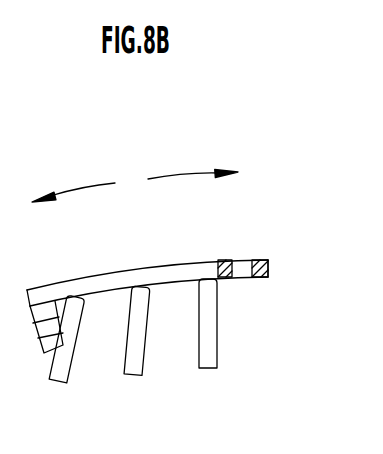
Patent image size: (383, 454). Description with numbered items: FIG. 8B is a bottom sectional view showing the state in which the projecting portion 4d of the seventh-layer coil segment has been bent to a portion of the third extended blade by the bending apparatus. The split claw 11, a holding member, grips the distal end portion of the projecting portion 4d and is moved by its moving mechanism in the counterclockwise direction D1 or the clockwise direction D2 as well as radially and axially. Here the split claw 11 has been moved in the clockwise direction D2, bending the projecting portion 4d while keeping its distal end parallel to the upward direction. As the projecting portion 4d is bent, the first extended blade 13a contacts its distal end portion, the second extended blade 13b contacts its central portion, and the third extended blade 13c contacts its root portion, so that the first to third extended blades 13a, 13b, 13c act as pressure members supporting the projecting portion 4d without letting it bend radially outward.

The projecting portion 4d is at (112, 278).
The split claw 11 is at (258, 260).
The first extended blade 13a is at (208, 369).
The second extended blade 13b is at (149, 375).
The third extended blade 13c is at (95, 383).
The counterclockwise direction D1 is at (98, 183).
The clockwise direction D2 is at (170, 178).